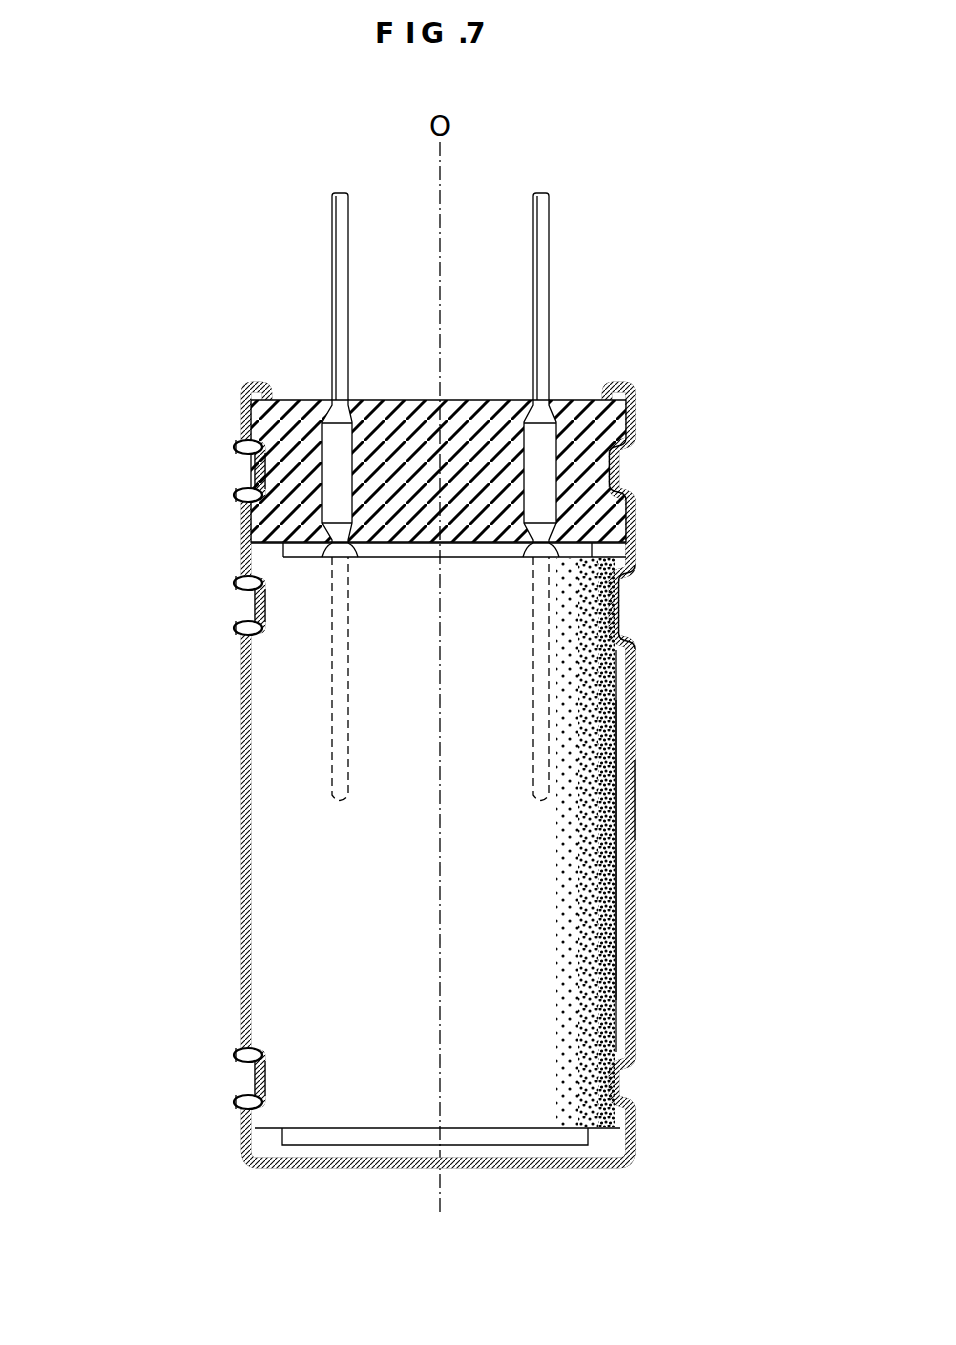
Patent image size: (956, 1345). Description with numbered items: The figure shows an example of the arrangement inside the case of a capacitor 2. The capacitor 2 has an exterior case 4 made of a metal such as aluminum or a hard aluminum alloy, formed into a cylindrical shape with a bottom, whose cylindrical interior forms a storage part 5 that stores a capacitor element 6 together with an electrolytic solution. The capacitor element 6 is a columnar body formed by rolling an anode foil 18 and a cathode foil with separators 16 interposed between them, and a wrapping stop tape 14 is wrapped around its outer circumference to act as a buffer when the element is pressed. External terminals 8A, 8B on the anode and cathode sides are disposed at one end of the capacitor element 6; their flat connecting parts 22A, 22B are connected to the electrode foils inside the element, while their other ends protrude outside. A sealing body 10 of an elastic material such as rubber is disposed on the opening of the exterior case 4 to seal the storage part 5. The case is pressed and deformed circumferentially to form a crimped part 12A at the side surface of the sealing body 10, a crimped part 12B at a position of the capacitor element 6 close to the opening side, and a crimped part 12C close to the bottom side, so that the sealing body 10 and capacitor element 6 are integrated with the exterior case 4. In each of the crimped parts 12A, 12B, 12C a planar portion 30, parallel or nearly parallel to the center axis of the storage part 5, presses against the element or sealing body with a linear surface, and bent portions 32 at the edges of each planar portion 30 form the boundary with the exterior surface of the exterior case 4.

The capacitor 2 is at (213, 1232).
The exterior case 4 is at (241, 940).
The storage part 5 is at (620, 800).
The capacitor element 6 is at (619, 662).
The external terminal 8A is at (551, 285).
The external terminal 8B is at (349, 280).
The sealing body 10 is at (603, 453).
The crimped part 12A is at (178, 405).
The crimped part 12B is at (178, 568).
The crimped part 12C is at (178, 1015).
The wrapping stop tape 14 is at (596, 995).
The separator 16 is at (575, 1145).
The anode foil 18 is at (606, 912).
The connecting part 22A is at (549, 724).
The connecting part 22B is at (332, 724).
The planar portion 30 is at (256, 472).
The bent portion 32 is at (236, 447).